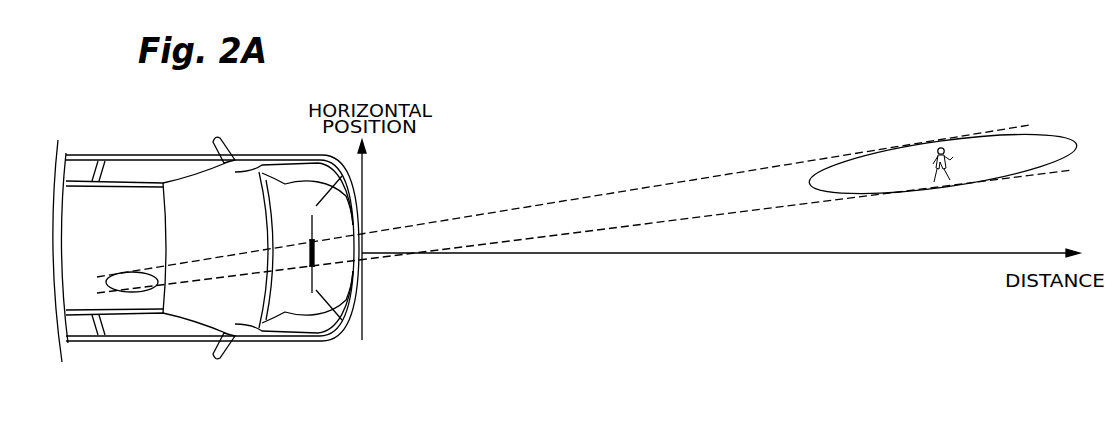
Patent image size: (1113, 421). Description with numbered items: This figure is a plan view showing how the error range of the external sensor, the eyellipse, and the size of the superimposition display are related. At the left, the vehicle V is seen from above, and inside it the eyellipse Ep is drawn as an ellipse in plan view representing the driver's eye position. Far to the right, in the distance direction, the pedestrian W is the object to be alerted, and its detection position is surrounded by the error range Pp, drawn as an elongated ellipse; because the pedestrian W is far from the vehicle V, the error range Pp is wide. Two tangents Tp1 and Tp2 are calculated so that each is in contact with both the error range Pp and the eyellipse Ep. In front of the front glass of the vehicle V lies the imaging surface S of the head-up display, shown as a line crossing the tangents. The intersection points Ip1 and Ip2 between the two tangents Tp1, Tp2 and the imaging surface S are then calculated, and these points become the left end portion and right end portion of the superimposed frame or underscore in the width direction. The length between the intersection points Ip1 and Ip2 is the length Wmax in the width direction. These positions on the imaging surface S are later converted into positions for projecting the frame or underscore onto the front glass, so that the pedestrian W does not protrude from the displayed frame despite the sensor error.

The vehicle V is at (102, 345).
The eyellipse Ep is at (124, 272).
The imaging surface S is at (315, 282).
The intersection point Ip1 is at (311, 242).
The intersection point Ip2 is at (316, 275).
The length in the width direction Wmax is at (316, 252).
The tangent Tp1 is at (655, 184).
The tangent Tp2 is at (647, 224).
The error range Pp is at (1047, 133).
The pedestrian W is at (942, 148).